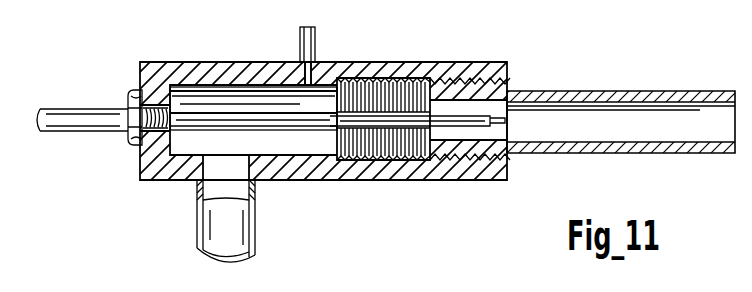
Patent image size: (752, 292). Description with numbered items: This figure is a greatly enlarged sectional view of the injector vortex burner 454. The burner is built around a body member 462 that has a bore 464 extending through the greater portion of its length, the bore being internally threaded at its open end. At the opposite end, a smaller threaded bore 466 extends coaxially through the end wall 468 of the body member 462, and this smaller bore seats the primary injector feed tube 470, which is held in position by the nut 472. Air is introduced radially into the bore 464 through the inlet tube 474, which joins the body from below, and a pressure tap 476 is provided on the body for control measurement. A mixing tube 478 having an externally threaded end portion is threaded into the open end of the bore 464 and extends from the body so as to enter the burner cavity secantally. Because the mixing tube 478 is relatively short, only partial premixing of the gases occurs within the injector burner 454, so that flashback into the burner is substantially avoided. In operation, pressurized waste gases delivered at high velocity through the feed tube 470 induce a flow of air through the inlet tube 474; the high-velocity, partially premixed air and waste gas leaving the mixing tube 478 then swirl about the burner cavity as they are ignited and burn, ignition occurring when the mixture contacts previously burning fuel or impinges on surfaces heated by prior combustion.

The injector vortex burner 454 is at (425, 185).
The body member 462 is at (398, 68).
The bore 464 is at (232, 87).
The threaded bore 466 is at (142, 95).
The end wall 468 is at (140, 88).
The primary injector feed tube 470 is at (313, 118).
The nut 472 is at (132, 138).
The inlet tube 474 is at (215, 220).
The pressure tap 476 is at (380, 30).
The mixing tube 478 is at (577, 58).